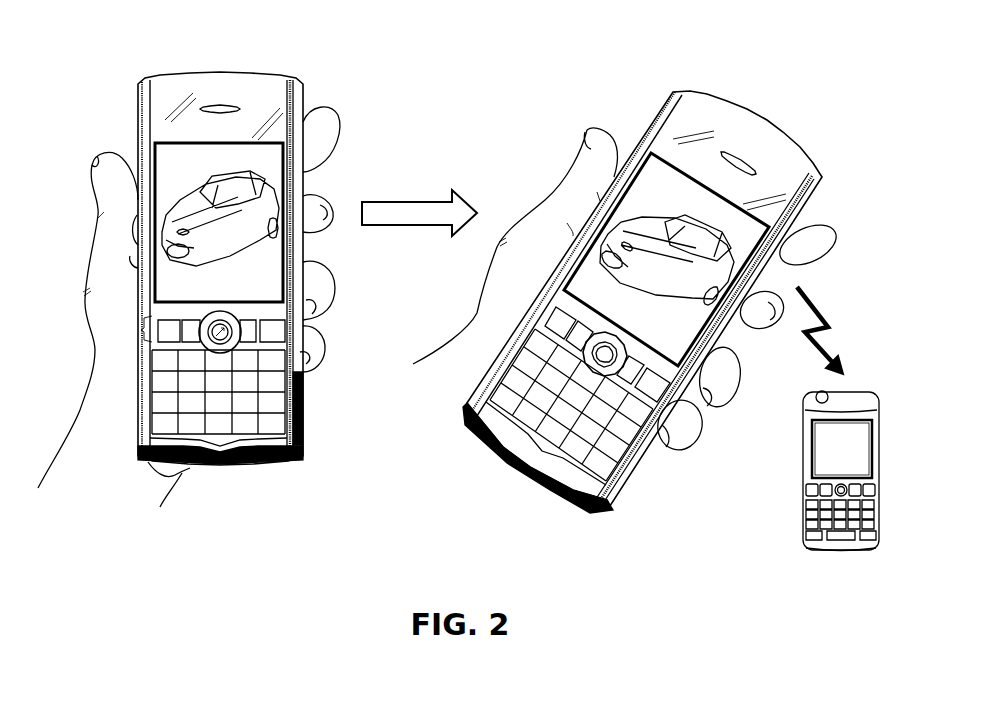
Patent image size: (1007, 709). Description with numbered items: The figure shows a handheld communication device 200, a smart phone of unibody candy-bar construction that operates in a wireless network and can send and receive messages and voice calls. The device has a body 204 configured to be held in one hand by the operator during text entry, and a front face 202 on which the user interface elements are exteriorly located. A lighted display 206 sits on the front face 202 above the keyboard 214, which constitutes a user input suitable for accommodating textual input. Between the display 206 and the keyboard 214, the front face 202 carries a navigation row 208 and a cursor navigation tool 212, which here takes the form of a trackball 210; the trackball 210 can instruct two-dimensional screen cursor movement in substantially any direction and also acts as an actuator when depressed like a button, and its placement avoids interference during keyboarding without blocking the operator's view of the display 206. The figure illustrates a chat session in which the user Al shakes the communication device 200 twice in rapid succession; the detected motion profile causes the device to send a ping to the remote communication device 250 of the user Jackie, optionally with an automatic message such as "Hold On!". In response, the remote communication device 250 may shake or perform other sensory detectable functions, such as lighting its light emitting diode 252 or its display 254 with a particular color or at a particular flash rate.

The communication device 200 is at (283, 49).
The front face 202 is at (297, 112).
The body 204 is at (135, 95).
The display 206 is at (156, 152).
The navigation row 208 is at (140, 326).
The trackball 210 is at (150, 360).
The cursor navigation tool 212 is at (302, 373).
The keyboard 214 is at (226, 466).
The remote communication device 250 is at (802, 460).
The light emitting diode 252 is at (815, 391).
The display 254 is at (826, 440).